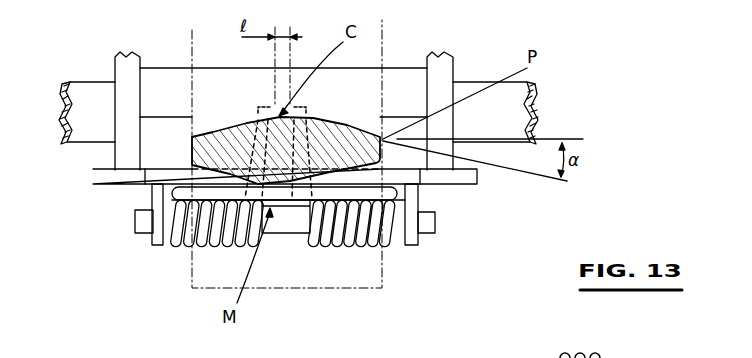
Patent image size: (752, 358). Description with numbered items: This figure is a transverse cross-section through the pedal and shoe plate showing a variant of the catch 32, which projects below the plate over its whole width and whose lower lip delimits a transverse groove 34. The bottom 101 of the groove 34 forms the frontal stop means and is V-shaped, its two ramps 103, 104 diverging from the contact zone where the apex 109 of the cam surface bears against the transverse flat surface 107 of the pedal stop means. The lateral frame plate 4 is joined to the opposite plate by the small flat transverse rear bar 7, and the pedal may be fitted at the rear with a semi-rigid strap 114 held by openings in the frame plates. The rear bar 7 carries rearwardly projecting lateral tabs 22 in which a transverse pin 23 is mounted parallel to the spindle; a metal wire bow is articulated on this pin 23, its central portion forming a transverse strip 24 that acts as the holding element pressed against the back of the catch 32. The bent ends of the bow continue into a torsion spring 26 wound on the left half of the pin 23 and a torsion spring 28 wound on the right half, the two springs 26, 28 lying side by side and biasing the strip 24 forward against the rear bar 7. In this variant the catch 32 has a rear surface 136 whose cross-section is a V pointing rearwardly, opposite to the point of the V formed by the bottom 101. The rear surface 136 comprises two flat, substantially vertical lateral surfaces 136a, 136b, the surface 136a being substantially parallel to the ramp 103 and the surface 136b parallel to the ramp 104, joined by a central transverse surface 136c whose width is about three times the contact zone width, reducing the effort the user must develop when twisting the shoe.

The semi-rigid strap 114 is at (98, 99).
The transverse flat surface 107 is at (170, 118).
The ramp portion 104 is at (213, 130).
The transverse groove 34 is at (230, 127).
The ramp portion 103 is at (335, 183).
The lateral pedal frame plate 4 is at (439, 102).
The bottom of groove 101 is at (344, 129).
The catch 32 is at (213, 146).
The rear bar 7 is at (447, 178).
The lateral tab 22 is at (157, 217).
The transverse pin 23 is at (423, 217).
The rear surface of catch 136 is at (251, 186).
The lateral surface 136a is at (168, 223).
The lateral surface 136b is at (392, 192).
The central transverse surface 136c is at (285, 200).
The torsion spring 26 is at (222, 238).
The apex 109 is at (327, 247).
The transverse strip 24 is at (278, 200).
The torsion spring 28 is at (388, 245).